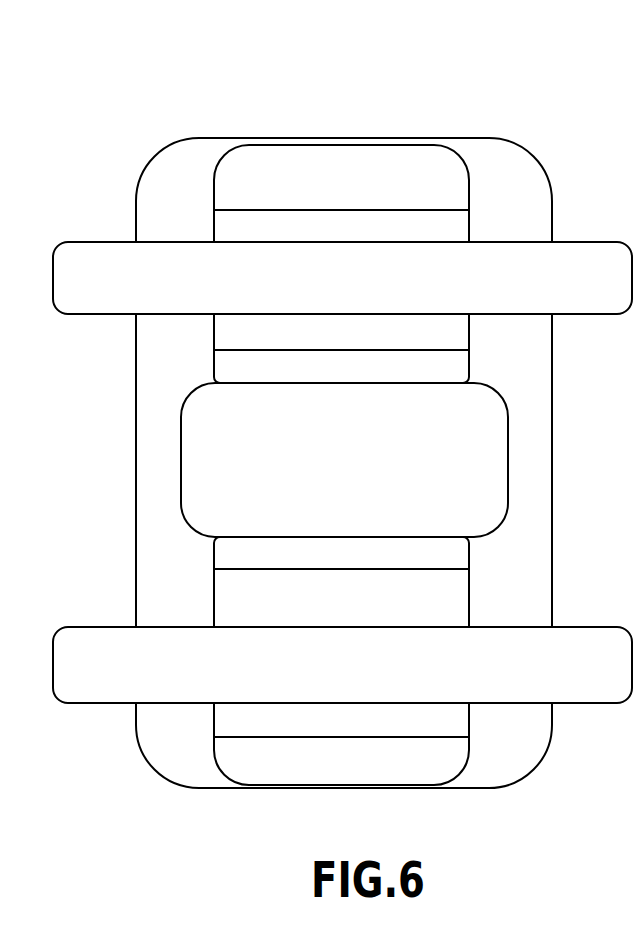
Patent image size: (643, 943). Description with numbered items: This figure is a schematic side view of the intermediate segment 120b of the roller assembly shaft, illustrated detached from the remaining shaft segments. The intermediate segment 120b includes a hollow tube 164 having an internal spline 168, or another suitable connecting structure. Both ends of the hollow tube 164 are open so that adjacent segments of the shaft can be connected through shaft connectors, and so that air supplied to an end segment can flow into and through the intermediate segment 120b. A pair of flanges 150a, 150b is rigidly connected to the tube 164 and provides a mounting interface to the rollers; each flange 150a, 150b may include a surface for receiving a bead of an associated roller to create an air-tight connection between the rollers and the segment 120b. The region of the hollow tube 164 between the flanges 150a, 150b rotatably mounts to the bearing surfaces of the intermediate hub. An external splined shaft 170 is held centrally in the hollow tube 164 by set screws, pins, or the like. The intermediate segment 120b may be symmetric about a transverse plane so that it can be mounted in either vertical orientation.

The intermediate segment 120b is at (143, 104).
The flange 150a is at (83, 262).
The flange 150b is at (90, 683).
The hollow tube 164 is at (150, 370).
The internal spline 168 is at (222, 195).
The external splined shaft 170 is at (509, 447).